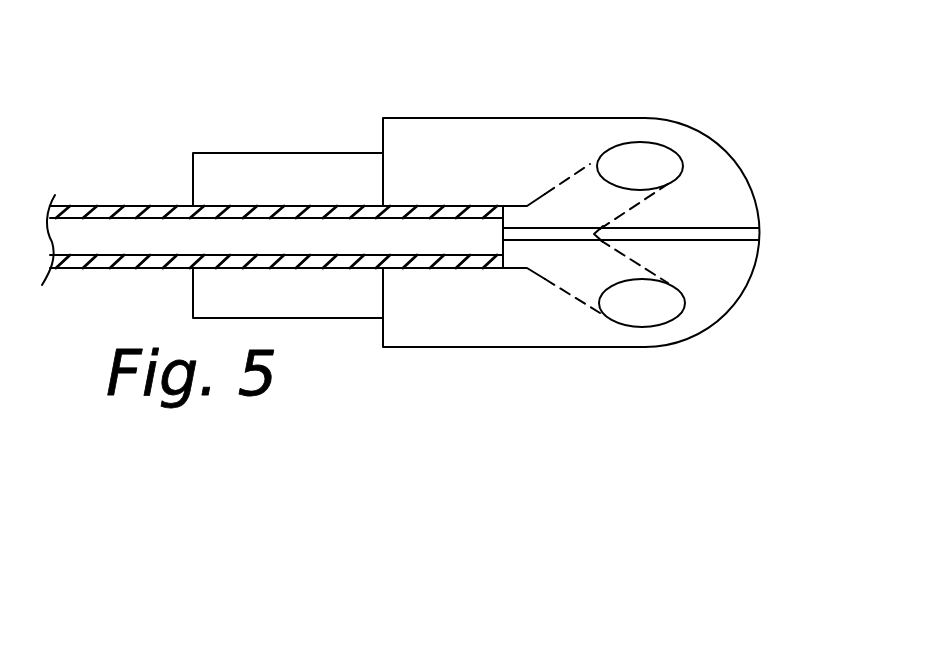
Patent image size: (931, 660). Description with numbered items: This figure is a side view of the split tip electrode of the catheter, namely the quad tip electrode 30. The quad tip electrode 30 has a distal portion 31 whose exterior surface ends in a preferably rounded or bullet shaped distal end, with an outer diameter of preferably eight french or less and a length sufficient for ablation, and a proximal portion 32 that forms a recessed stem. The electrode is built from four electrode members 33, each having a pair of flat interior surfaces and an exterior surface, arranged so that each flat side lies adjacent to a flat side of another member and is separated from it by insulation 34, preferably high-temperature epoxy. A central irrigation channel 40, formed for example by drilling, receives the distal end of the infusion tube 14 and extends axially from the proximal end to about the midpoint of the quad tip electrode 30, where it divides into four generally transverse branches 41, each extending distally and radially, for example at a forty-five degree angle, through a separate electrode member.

The infusion tube 14 is at (79, 211).
The quad tip electrode 30 is at (506, 232).
The distal portion 31 is at (477, 121).
The proximal portion 32 is at (293, 153).
The electrode member 33 is at (707, 175).
The insulation 34 is at (744, 235).
The central irrigation channel 40 is at (510, 255).
The transverse branch 41 is at (577, 203).